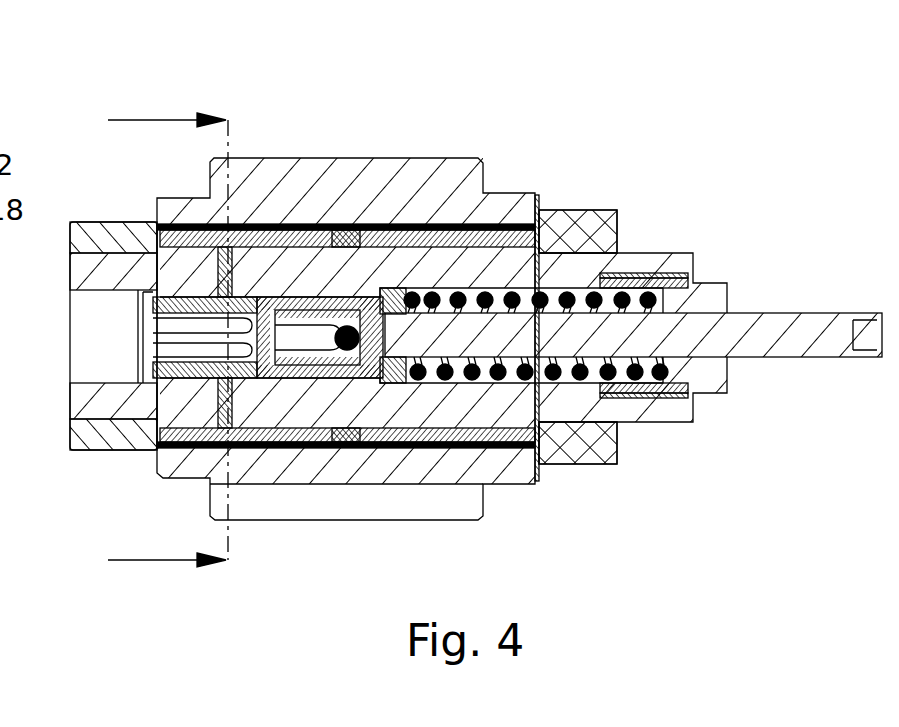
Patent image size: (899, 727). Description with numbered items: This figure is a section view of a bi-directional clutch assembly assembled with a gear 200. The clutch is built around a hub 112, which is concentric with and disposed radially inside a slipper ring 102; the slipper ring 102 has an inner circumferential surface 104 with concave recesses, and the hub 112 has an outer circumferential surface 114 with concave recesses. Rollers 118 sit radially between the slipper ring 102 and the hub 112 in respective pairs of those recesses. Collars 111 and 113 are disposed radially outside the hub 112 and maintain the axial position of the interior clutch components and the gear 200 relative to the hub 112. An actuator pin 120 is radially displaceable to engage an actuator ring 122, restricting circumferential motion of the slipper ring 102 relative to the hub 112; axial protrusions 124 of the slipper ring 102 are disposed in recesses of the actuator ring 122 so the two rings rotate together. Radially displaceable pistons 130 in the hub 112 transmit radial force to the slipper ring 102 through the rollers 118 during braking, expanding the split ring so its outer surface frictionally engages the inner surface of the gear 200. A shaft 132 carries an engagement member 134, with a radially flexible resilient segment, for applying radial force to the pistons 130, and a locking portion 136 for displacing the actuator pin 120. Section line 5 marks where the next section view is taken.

The section line 5- 5 is at (168, 343).
The slipper ring 102 is at (228, 221).
The inner circumferential surface 104 is at (173, 240).
The collar 111 is at (100, 432).
The hub 112 is at (510, 266).
The collar 113 is at (680, 408).
The outer circumferential surface 114 is at (197, 250).
The rollers 118 is at (152, 227).
The actuator pin 120 is at (497, 168).
The actuator ring 122 is at (360, 224).
The axial protrusions 124 is at (343, 446).
The pistons 130 is at (226, 425).
The shaft 132 is at (618, 398).
The engagement member 134 is at (192, 378).
The locking portion 136 is at (320, 305).
The gear 200 is at (270, 173).